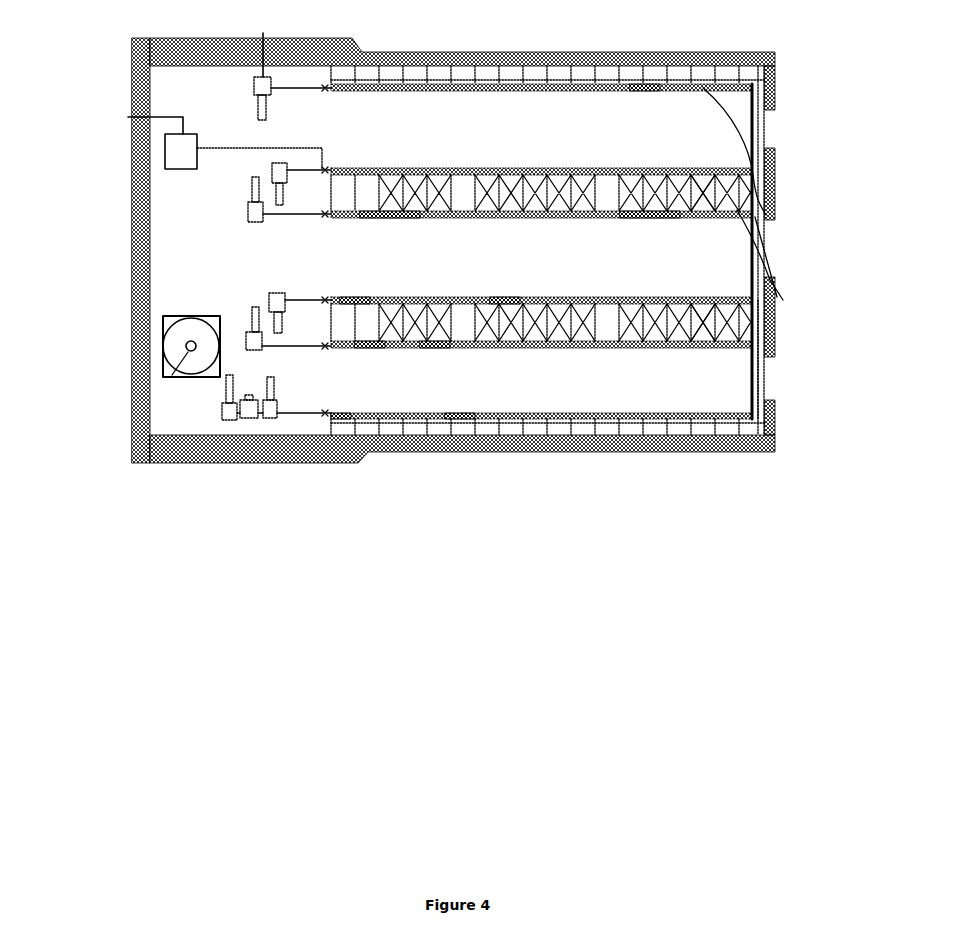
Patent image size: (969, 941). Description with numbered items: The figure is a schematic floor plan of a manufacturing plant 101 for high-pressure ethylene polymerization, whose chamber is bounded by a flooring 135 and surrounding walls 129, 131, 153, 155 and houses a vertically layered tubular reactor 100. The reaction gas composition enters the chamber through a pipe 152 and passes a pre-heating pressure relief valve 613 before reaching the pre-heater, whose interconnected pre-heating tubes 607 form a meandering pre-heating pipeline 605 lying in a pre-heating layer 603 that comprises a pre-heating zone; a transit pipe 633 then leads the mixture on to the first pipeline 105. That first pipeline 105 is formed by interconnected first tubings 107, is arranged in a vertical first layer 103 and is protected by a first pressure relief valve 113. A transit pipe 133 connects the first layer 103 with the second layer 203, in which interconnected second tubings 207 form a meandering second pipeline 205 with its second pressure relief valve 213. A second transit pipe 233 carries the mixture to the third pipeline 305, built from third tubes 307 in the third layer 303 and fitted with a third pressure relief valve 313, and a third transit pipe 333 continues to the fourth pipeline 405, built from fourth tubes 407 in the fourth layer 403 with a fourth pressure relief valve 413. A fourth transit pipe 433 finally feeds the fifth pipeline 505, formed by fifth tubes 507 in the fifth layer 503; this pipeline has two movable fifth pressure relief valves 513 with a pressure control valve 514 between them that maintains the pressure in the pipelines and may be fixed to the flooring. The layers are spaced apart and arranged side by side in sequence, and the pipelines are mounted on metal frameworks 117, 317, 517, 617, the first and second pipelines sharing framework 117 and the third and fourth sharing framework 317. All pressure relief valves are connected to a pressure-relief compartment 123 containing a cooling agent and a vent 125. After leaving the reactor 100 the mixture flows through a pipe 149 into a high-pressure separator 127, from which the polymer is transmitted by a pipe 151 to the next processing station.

The vertically layered tubular reactor 100 is at (700, 320).
The manufacturing plant 101 is at (433, 262).
The first layer 103 is at (760, 170).
The first pipeline 105 is at (447, 125).
The first tubings 107 is at (507, 167).
The first pressure relief valve 113 is at (272, 166).
The metal framework 117 is at (700, 185).
The pressure-relief compartment 123 is at (185, 347).
The vent 125 is at (139, 364).
The high-pressure separator 127 is at (178, 150).
The surrounding wall 129 is at (135, 300).
The surrounding wall 131 is at (777, 163).
The transit pipe 133 is at (757, 190).
The flooring 135 is at (400, 387).
The pipe 149 is at (290, 147).
The pipe 151 is at (160, 112).
The pipe 152 is at (265, 43).
The surrounding wall 153 is at (530, 450).
The surrounding wall 155 is at (470, 48).
The second layer 203 is at (598, 231).
The second pipeline 205 is at (647, 218).
The second tubings 207 is at (397, 220).
The second pressure relief valve 213 is at (258, 222).
The second transit pipe 233 is at (757, 260).
The third layer 303 is at (598, 282).
The third pipeline 305 is at (355, 297).
The third tubes 307 is at (505, 297).
The third pressure relief valve 313 is at (272, 293).
The metal framework 317 is at (703, 297).
The third transit pipe 333 is at (760, 337).
The fourth layer 403 is at (598, 353).
The fourth pipeline 405 is at (370, 348).
The fourth tubes 407 is at (620, 348).
The fourth pressure relief valve 413 is at (253, 332).
The fourth transit pipe 433 is at (757, 378).
The fifth layer 503 is at (598, 401).
The fifth pipeline 505 is at (335, 413).
The fifth tubes 507 is at (460, 413).
The fifth pressure relief valve 513 is at (222, 408).
The pressure control valve 514 is at (250, 415).
The metal framework 517 is at (683, 415).
The pre-heating layer 603 is at (597, 93).
The pre-heating pipeline 605 is at (645, 92).
The pre-heating tubes 607 is at (440, 90).
The pre-heating pressure relief valve 613 is at (255, 85).
The metal framework 617 is at (385, 90).
The transit pipe 633 is at (775, 250).